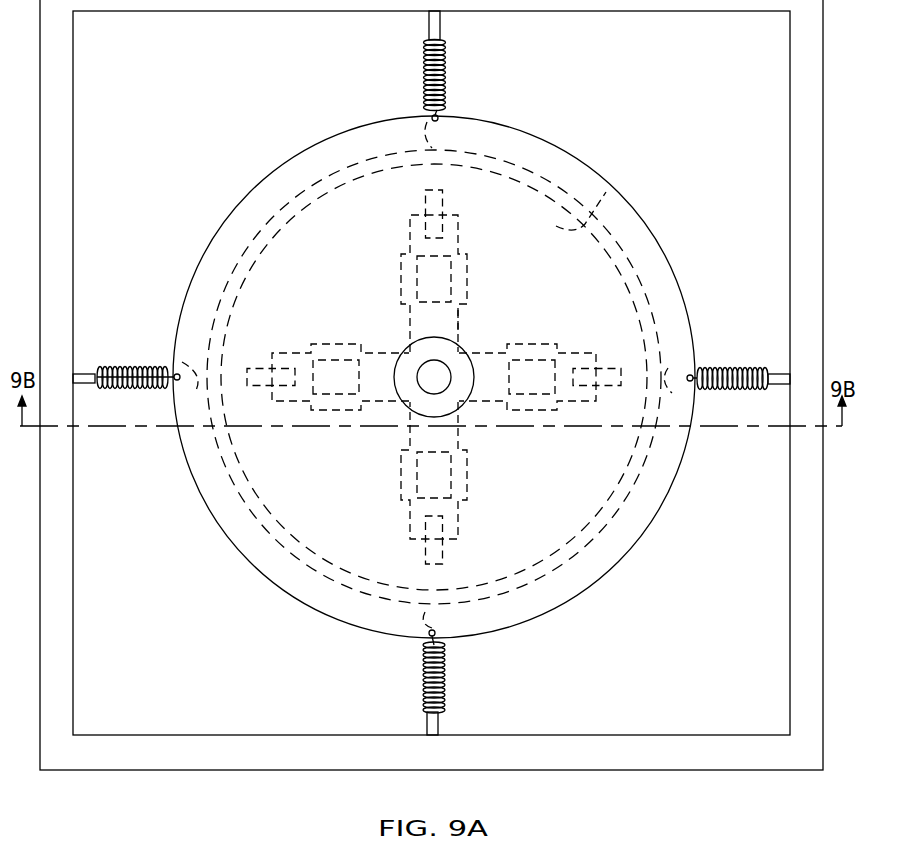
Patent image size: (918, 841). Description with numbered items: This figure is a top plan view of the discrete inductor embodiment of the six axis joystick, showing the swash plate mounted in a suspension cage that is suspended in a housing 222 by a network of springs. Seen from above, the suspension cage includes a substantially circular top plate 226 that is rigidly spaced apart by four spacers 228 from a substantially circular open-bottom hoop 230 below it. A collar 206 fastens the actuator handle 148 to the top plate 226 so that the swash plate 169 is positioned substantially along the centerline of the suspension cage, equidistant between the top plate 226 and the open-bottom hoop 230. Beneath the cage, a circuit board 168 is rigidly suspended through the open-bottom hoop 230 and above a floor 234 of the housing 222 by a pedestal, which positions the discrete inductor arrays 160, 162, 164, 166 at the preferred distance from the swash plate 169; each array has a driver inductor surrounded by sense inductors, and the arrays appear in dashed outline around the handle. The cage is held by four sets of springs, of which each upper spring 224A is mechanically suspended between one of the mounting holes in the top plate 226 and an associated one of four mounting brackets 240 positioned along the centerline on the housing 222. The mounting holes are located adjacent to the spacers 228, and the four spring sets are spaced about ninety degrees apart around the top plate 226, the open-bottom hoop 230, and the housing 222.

The actuator handle 148 is at (433, 375).
The discrete inductor array 160 is at (574, 334).
The discrete inductor array 162 is at (396, 228).
The discrete inductor array 164 is at (294, 336).
The discrete inductor array 166 is at (392, 512).
The circuit board 168 is at (558, 227).
The swash plate 169 is at (462, 326).
The collar 206 is at (405, 372).
The housing 222 is at (142, 755).
The upper spring 224A is at (423, 78).
The top plate 226 is at (354, 268).
The spacer 228 is at (440, 145).
The open-bottom hoop 230 is at (612, 186).
The floor 234 is at (165, 679).
The mounting bracket 240 is at (441, 28).